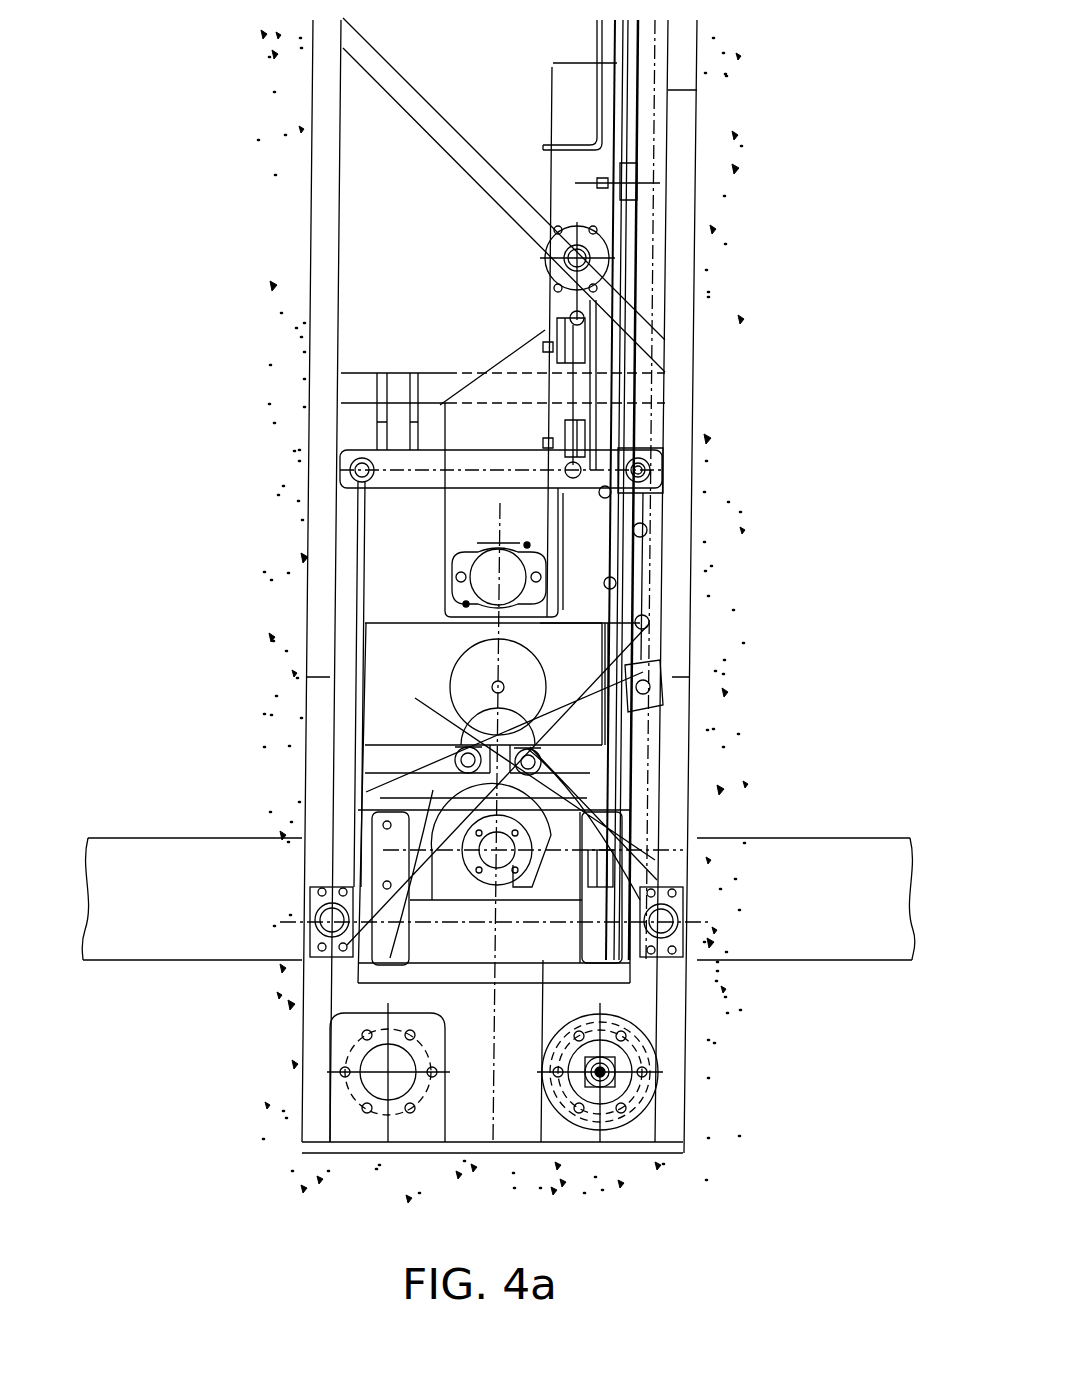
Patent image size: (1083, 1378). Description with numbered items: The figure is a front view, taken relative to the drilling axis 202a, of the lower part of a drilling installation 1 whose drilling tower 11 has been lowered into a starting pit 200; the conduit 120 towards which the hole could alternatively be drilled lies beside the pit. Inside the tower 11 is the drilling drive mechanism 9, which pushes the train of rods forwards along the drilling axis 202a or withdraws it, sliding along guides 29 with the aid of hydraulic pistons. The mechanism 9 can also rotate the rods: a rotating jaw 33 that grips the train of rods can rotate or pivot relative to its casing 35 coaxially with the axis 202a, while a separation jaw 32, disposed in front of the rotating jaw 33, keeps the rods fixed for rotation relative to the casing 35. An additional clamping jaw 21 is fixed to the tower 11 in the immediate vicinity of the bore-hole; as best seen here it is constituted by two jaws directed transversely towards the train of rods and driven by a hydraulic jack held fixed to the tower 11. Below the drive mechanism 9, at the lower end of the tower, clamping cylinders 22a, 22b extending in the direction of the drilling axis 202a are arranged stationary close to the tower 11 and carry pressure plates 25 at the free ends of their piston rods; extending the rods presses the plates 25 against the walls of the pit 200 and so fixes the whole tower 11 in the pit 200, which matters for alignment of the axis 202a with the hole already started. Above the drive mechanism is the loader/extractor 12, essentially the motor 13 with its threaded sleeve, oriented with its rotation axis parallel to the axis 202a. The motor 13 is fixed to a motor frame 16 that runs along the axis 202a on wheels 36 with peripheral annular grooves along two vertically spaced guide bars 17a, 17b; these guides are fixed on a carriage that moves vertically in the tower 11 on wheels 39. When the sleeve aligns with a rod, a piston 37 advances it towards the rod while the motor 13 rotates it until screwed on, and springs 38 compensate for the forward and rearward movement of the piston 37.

The starting pit 200 is at (370, 128).
The drilling tower 11 is at (452, 131).
The installation 1 is at (392, 356).
The loader/extractor 12 is at (429, 255).
The piston 37 is at (575, 245).
The springs 38 is at (560, 278).
The guide 17a is at (567, 315).
The wheels 36 is at (547, 345).
The wheels 39 is at (568, 358).
The guide 17b is at (605, 490).
The motor frame 16 is at (460, 518).
The motor 13 is at (483, 588).
The drilling drive mechanism 9 is at (377, 753).
The casing 35 is at (482, 720).
The separation jaw 32 is at (585, 708).
The guides 29 is at (470, 750).
The rotating jaw 33 is at (467, 758).
The clamping jaw 21 is at (588, 762).
The drilling axis 202a is at (492, 862).
The conduit 120 is at (850, 850).
The pressure plates 25 is at (563, 1093).
The clamping cylinder 22a is at (370, 1083).
The clamping cylinder 22b is at (610, 1085).